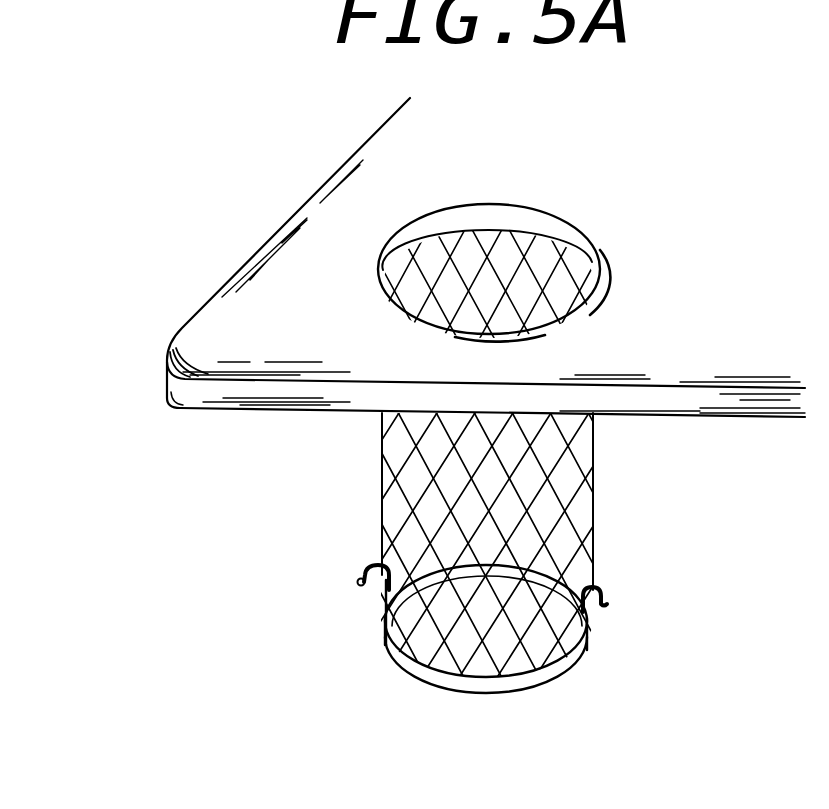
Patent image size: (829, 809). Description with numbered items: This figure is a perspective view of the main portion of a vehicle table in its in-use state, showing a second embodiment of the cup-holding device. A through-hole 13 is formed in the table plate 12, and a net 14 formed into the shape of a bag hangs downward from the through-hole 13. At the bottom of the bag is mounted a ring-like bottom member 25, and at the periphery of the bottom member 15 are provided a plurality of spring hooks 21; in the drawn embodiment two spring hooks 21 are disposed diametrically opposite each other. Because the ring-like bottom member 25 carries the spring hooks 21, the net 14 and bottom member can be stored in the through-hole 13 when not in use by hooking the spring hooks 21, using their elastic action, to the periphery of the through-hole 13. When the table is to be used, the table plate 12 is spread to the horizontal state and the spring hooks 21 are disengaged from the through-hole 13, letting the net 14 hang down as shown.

The table plate 12 is at (195, 312).
The through-hole 13 is at (593, 243).
The net 14 is at (583, 522).
The bottom member 15 is at (603, 597).
The spring hooks 21 is at (360, 577).
The ring-like bottom member 25 is at (430, 675).